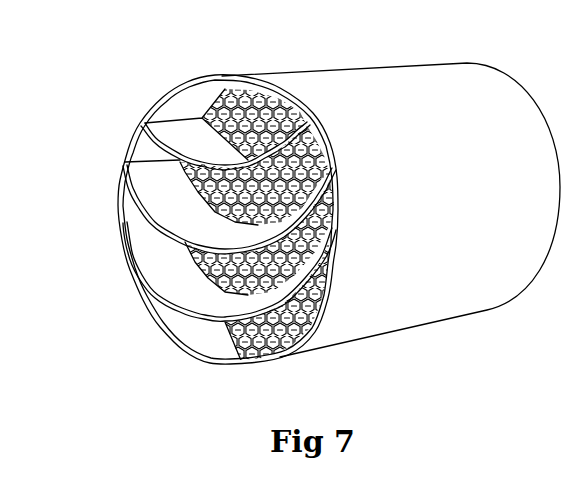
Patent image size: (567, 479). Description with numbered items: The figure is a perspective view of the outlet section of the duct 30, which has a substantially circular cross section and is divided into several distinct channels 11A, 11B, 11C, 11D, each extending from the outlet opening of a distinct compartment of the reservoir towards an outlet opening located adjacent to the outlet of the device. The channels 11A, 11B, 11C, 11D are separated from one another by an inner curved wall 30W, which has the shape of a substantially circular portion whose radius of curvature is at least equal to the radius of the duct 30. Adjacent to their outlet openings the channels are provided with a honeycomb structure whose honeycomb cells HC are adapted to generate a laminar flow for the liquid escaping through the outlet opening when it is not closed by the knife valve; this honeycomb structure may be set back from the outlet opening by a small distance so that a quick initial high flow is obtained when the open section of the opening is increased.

The duct 30 is at (453, 312).
The inner curved wall 30W is at (230, 322).
The honeycomb cells HC is at (273, 100).
The channel 11A is at (198, 327).
The channel 11B is at (190, 270).
The channel 11C is at (185, 197).
The channel 11D is at (205, 135).